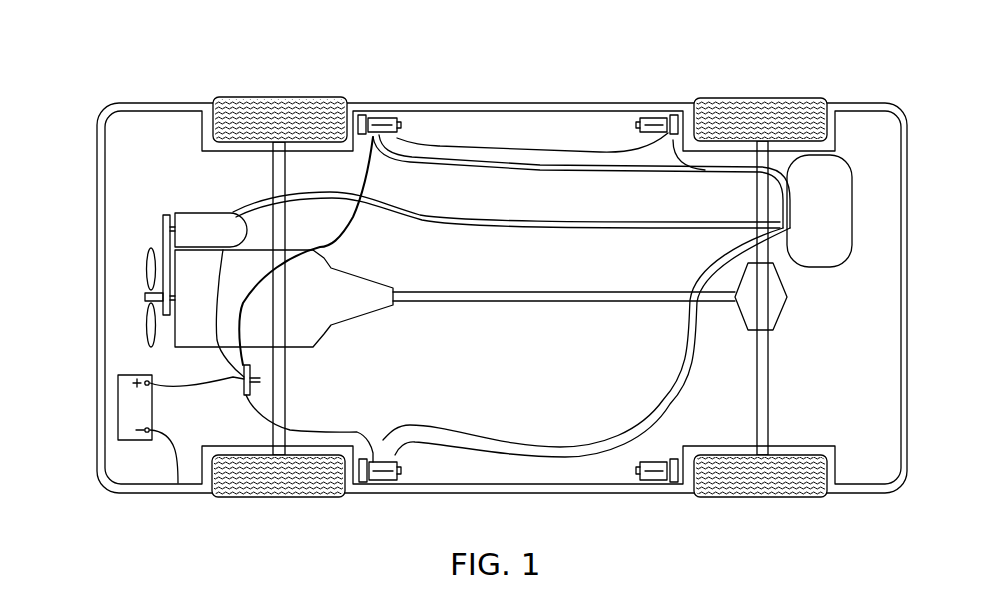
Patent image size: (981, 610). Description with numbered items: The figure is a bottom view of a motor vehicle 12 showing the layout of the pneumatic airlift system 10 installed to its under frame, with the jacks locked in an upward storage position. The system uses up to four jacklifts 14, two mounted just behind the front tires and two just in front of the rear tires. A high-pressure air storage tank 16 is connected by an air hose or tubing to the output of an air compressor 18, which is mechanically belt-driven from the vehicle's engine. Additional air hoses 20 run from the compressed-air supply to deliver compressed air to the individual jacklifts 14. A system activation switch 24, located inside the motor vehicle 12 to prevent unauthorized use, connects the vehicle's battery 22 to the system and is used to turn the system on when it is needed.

The pneumatic airlift system 10 is at (160, 45).
The motor vehicle 12 is at (860, 103).
The jacklifts 14 is at (383, 118).
The high-pressure air storage tank 16 is at (853, 193).
The air compressor 18 is at (198, 213).
The air hoses 20 is at (530, 165).
The battery 22 is at (118, 405).
The system activation switch 24 is at (244, 395).